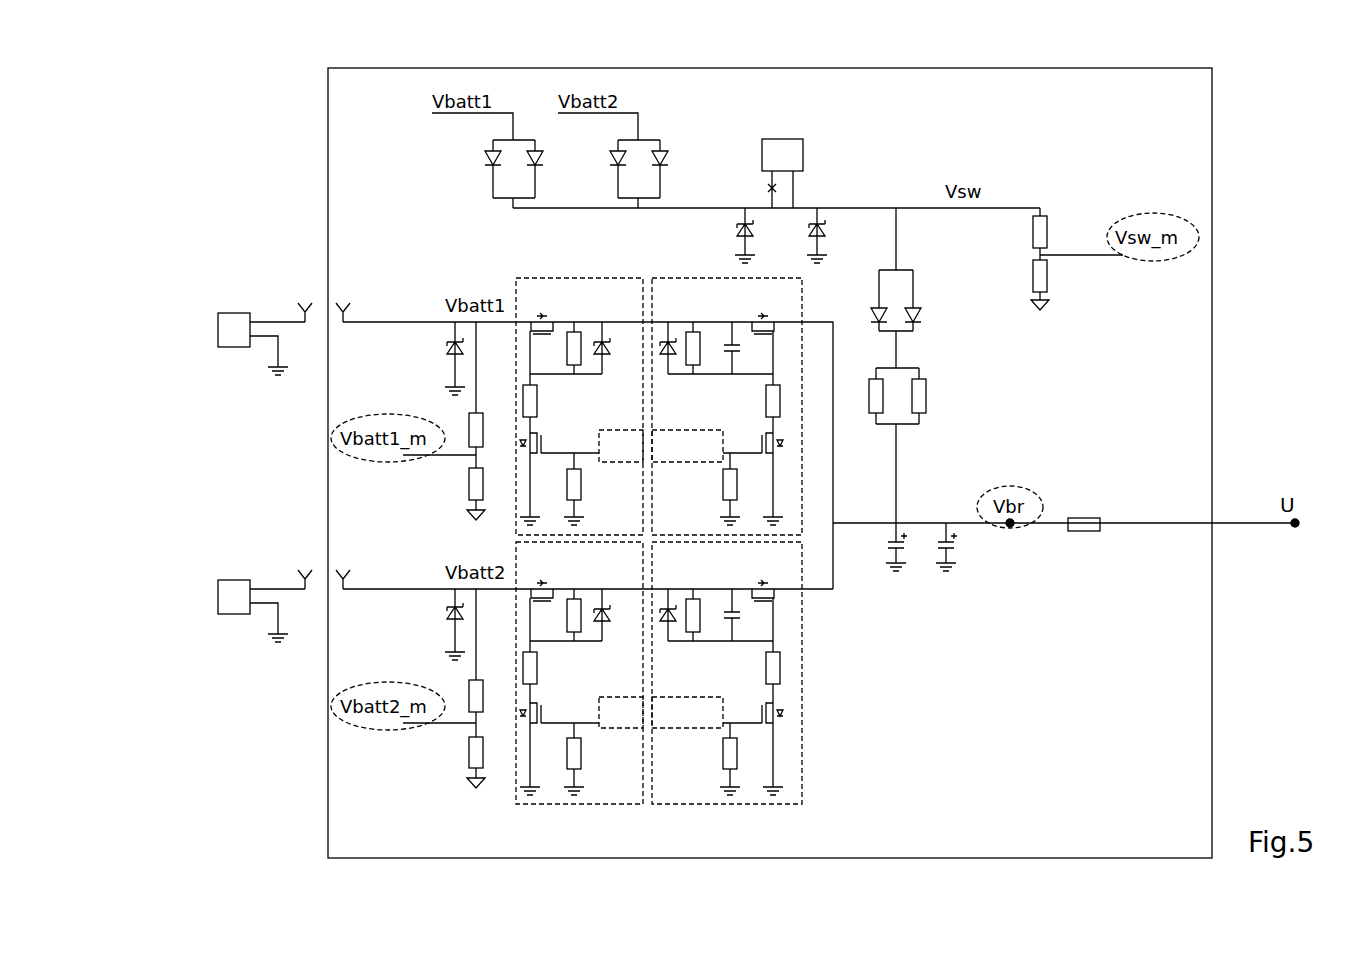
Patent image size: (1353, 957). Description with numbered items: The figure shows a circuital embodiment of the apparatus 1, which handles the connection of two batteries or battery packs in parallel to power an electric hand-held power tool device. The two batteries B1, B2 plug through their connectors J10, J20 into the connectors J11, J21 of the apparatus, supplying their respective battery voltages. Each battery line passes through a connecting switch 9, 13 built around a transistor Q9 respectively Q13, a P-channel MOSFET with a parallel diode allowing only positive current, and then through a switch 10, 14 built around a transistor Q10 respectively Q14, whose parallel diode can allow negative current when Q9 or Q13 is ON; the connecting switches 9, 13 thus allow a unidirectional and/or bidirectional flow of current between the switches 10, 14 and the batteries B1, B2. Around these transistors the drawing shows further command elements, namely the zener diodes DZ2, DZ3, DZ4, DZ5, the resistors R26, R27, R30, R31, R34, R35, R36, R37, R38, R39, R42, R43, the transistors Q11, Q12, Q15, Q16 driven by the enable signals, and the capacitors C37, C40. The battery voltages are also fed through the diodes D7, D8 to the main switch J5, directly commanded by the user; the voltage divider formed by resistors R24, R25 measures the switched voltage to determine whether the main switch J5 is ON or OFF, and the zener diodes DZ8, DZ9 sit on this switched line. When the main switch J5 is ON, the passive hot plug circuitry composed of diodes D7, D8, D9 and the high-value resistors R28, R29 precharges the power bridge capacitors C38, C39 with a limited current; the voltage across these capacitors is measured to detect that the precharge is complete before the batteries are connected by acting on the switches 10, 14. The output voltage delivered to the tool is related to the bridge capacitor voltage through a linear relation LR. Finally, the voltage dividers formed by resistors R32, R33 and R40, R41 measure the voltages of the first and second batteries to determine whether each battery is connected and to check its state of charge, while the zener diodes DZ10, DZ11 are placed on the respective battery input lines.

The apparatus 1 is at (1212, 119).
The connecting switch 9 is at (523, 277).
The switch 10 is at (657, 277).
The connecting switch 13 is at (523, 805).
The switch 14 is at (660, 805).
The battery B1 is at (218, 318).
The battery B2 is at (218, 585).
The connector J10 is at (296, 301).
The connector J11 is at (349, 301).
The connector J20 is at (296, 568).
The connector J21 is at (349, 568).
The main switch J5 is at (783, 137).
The diode D7 is at (540, 147).
The diode D8 is at (662, 147).
The diode D9 is at (915, 310).
The zener diode DZ8 is at (737, 237).
The zener diode DZ9 is at (826, 238).
The zener diode DZ10 is at (430, 358).
The zener diode DZ11 is at (430, 624).
The zener diode DZ2 is at (607, 356).
The zener diode DZ3 is at (672, 356).
The zener diode DZ4 is at (607, 623).
The zener diode DZ5 is at (672, 623).
The resistor R24 is at (1058, 234).
The resistor R25 is at (1057, 285).
The resistor R26 is at (559, 348).
The resistor R27 is at (704, 348).
The resistor R28 is at (885, 386).
The resistor R29 is at (937, 396).
The resistor R30 is at (549, 401).
The resistor R31 is at (753, 401).
The resistor R32 is at (491, 395).
The resistor R33 is at (490, 494).
The resistor R34 is at (593, 489).
The resistor R35 is at (710, 489).
The resistor R36 is at (559, 615).
The resistor R37 is at (704, 615).
The resistor R38 is at (549, 668).
The resistor R39 is at (753, 668).
The resistor R40 is at (491, 663).
The resistor R41 is at (490, 762).
The resistor R42 is at (593, 759).
The resistor R43 is at (710, 759).
The transistor Q9 is at (542, 311).
The transistor Q10 is at (762, 311).
The MOSFET driver transistor Q11 is at (553, 442).
The MOSFET driver transistor Q12 is at (795, 443).
The transistor Q13 is at (548, 578).
The transistor Q14 is at (762, 578).
The MOSFET driver transistor Q15 is at (553, 712).
The MOSFET driver transistor Q16 is at (795, 713).
The capacitor C37 is at (741, 349).
The power bridge capacitor C38 is at (907, 552).
The power bridge capacitor C39 is at (957, 552).
The capacitor C40 is at (741, 616).
The linear relation LR is at (1084, 512).